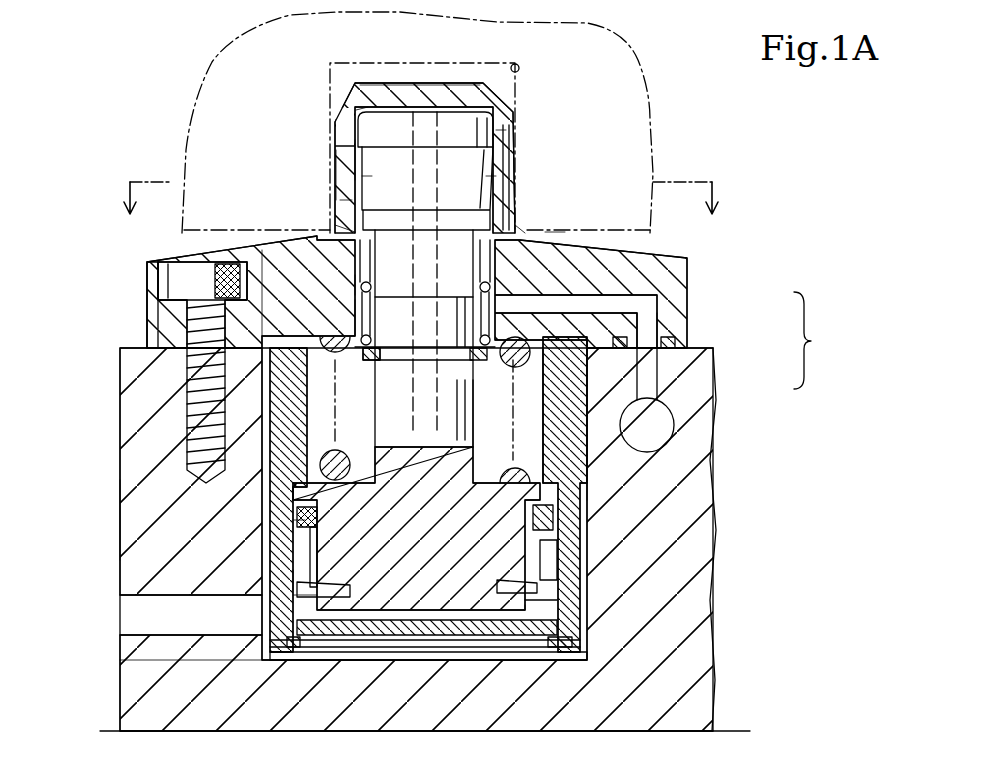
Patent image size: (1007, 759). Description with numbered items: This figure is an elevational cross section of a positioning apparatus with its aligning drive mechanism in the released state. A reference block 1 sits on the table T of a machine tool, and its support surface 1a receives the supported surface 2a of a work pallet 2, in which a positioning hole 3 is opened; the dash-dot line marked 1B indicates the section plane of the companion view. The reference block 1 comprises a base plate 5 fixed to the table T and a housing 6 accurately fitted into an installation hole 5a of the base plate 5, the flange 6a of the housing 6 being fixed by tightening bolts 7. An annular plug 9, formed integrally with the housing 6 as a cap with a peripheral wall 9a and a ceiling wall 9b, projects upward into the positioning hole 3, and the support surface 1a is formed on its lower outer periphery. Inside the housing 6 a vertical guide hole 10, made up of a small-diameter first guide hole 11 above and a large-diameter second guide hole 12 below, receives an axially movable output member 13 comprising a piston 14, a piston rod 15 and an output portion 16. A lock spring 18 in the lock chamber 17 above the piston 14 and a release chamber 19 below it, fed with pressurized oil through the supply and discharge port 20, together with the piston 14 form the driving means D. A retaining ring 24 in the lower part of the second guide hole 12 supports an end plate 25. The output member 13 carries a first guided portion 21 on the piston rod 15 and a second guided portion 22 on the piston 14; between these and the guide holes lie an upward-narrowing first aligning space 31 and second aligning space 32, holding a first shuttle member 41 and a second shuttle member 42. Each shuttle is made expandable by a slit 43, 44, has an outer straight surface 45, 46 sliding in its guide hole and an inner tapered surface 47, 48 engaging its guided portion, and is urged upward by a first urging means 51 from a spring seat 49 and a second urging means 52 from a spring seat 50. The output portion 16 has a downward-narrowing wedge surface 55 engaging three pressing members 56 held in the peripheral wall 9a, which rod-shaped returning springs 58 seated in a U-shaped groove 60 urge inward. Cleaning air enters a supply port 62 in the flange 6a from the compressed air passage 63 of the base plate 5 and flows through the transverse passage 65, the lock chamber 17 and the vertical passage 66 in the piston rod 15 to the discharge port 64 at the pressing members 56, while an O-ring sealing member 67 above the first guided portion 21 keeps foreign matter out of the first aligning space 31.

The reference block 1 is at (811, 340).
The support surface 1a is at (525, 232).
The section line 1B- 1B is at (417, 195).
The work pallet 2 is at (652, 106).
The supported surface 2a is at (560, 230).
The positioning hole 3 is at (520, 62).
The base plate 5 is at (720, 382).
The installation hole 5a is at (590, 497).
The housing 6 is at (693, 322).
The flange 6a is at (147, 326).
The tightening bolt 7 is at (160, 282).
The annular plug 9 is at (519, 127).
The peripheral wall 9a is at (345, 150).
The ceiling wall 9b is at (425, 96).
The guide hole 10 is at (290, 488).
The first guide hole 11 is at (350, 305).
The second guide hole 12 is at (257, 650).
The output member 13 is at (392, 108).
The piston 14 is at (600, 492).
The piston rod 15 is at (476, 398).
The output portion 16 is at (448, 118).
The lock chamber 17 is at (585, 530).
The lock spring 18 is at (587, 401).
The release chamber 19 is at (525, 612).
The supply and discharge port 20 is at (135, 614).
The first guided portion 21 is at (372, 290).
The second guided portion 22 is at (318, 520).
The retaining ring 24 is at (298, 648).
The end plate 25 is at (350, 637).
The first aligning space 31 is at (338, 232).
The second aligning space 32 is at (293, 520).
The first shuttle member 41 is at (279, 293).
The second shuttle member 42 is at (300, 592).
The slit 43 is at (492, 262).
The slit 44 is at (555, 580).
The straight surface 45 is at (354, 283).
The straight surface 46 is at (290, 580).
The tapered surface 47 is at (372, 262).
The tapered surface 48 is at (318, 562).
The spring seat 49 is at (340, 408).
The spring seat 50 is at (360, 640).
The first urging means 51 is at (424, 368).
The second urging means 52 is at (465, 580).
The wedge surface 55 is at (508, 170).
The pressing member 56 is at (340, 160).
The returning spring 58 is at (358, 181).
The U-shaped groove 60 is at (490, 176).
The supply port 62 is at (650, 312).
The compressed air passage 63 is at (674, 428).
The discharge port 64 is at (345, 210).
The transverse passage 65 is at (615, 295).
The vertical passage 66 is at (398, 470).
The sealing member 67 is at (478, 262).
The driving means D is at (545, 607).
The table T is at (740, 731).